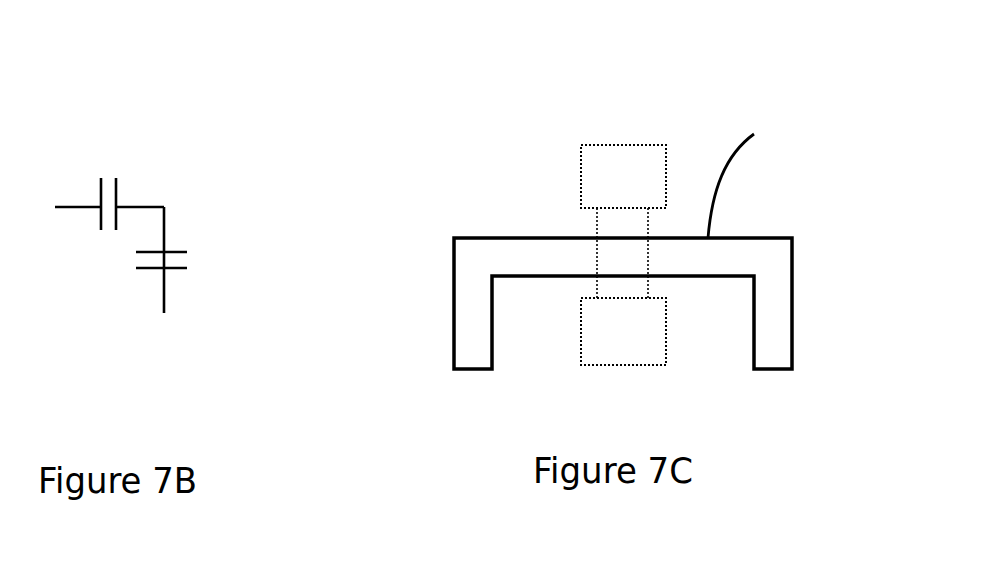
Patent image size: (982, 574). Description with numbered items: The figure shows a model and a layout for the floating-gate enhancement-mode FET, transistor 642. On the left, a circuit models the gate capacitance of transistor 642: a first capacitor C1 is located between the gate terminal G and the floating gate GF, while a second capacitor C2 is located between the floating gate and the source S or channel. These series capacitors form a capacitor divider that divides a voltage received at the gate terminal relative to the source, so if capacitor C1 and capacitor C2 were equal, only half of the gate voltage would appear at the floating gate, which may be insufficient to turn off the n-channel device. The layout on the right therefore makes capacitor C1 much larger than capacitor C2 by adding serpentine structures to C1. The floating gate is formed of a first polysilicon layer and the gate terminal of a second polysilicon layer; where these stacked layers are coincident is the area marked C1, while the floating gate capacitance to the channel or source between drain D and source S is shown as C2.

In FIG. 7B, the transistor 642 is at (151, 223).
In FIG. 7C, the transistor 642 is at (694, 204).
In FIG. 7B, the first capacitor C1 is at (117, 165).
In FIG. 7C, the first capacitor C1 is at (479, 259).
In FIG. 7B, the second capacitor C2 is at (195, 266).
In FIG. 7C, the second capacitor C2 is at (620, 259).